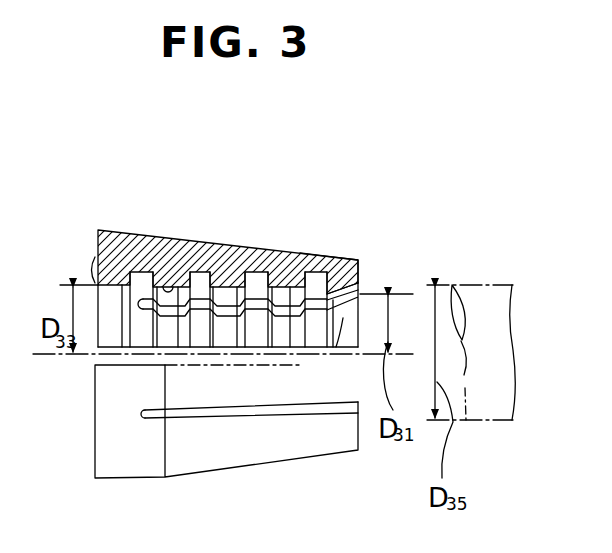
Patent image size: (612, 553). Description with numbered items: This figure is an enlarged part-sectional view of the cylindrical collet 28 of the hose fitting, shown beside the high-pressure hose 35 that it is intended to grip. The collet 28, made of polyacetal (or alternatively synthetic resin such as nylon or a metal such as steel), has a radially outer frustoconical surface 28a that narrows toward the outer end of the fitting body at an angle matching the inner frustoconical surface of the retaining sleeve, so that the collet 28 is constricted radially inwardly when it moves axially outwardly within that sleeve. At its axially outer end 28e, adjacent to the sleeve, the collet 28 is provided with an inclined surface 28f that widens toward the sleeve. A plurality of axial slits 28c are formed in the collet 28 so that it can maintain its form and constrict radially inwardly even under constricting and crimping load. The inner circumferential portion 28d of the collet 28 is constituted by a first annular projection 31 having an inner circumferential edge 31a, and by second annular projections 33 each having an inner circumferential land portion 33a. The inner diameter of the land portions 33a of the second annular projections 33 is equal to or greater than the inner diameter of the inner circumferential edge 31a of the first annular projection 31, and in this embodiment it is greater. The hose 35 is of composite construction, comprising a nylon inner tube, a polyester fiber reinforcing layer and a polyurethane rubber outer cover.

The cylindrical collet 28 is at (407, 162).
The radially outer frustoconical surface 28a is at (233, 243).
The axial slits 28c is at (97, 366).
The inner circumferential portion 28d is at (83, 273).
The axially outer end 28e is at (320, 254).
The inclined surface 28f is at (346, 287).
The first annular projection 31 is at (336, 300).
The inner circumferential edge 31a is at (343, 318).
The second annular projections 33 is at (148, 277).
The inner circumferential land portion 33a is at (170, 283).
The high-pressure hose 35 is at (497, 284).